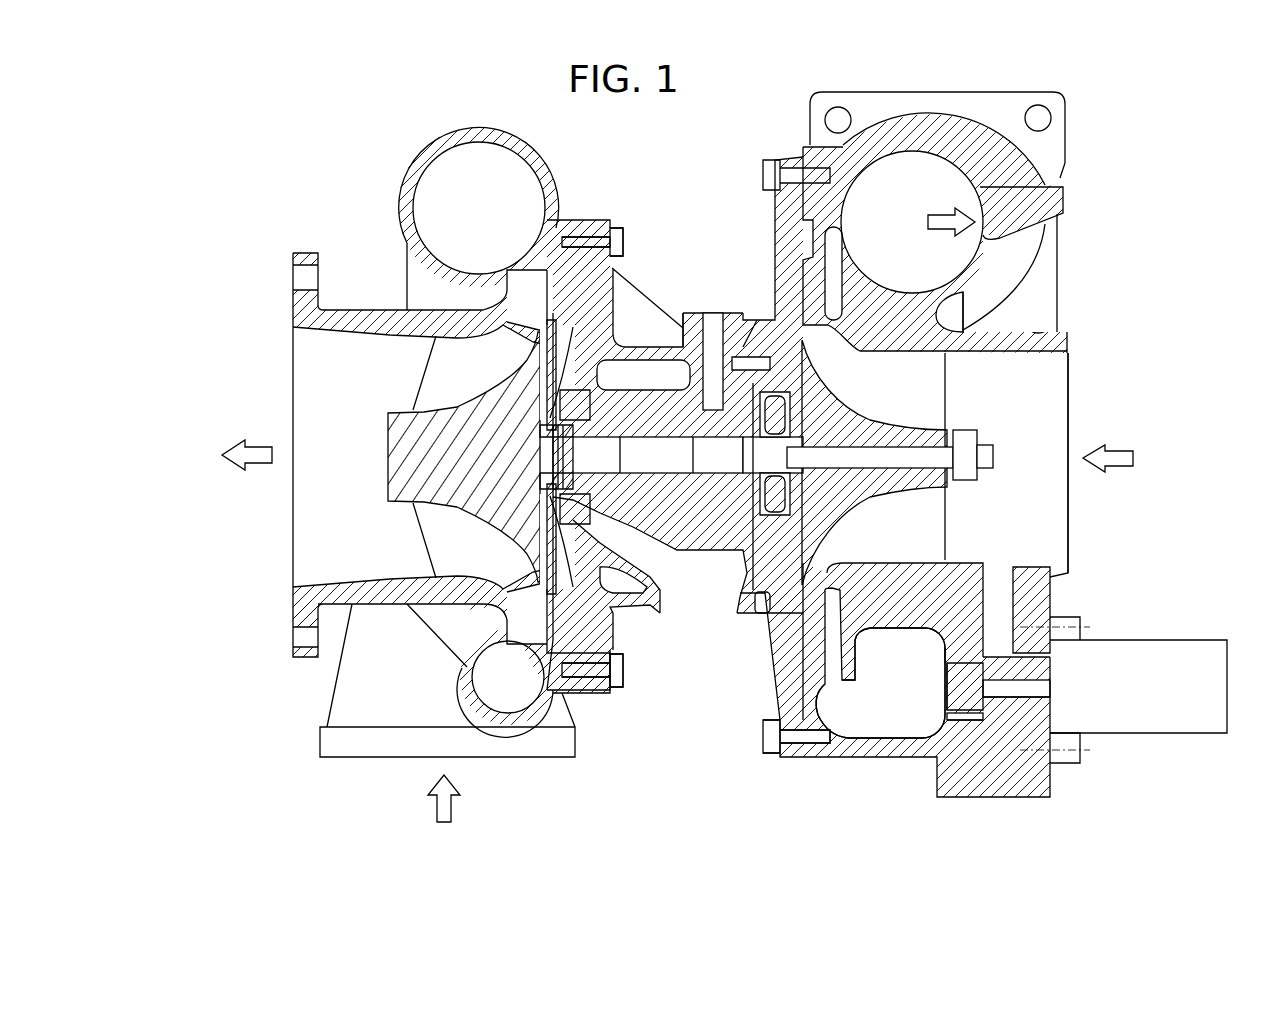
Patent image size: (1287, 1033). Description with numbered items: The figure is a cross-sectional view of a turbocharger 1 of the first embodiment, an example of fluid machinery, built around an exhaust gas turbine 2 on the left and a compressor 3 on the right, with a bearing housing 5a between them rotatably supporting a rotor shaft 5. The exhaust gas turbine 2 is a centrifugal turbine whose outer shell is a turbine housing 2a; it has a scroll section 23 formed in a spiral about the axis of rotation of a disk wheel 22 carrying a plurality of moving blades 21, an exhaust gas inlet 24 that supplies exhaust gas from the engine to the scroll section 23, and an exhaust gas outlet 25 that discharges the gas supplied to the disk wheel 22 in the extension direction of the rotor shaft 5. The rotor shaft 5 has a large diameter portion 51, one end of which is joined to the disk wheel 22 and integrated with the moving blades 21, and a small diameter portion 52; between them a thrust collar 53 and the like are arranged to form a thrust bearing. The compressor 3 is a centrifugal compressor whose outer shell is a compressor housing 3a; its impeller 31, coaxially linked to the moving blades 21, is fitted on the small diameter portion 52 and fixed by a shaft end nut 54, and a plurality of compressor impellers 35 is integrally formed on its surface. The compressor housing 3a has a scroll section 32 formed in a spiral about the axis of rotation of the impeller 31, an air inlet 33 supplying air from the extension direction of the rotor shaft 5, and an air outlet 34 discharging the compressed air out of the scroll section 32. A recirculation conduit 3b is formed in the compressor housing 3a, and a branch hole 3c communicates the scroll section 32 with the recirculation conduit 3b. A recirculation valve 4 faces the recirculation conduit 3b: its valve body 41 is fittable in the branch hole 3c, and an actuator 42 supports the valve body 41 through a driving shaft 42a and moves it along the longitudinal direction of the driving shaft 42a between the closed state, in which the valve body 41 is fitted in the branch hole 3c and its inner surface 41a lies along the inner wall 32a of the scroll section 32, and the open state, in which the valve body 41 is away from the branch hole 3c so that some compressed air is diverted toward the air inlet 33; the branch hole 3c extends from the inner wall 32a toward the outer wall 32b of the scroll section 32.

The turbocharger 1 is at (742, 94).
The exhaust gas turbine 2 is at (383, 200).
The turbine housing 2a is at (372, 310).
The moving blades 21 is at (430, 372).
The disk wheel 22 is at (480, 457).
The scroll section 23 is at (480, 141).
The exhaust gas inlet 24 is at (318, 740).
The exhaust gas outlet 25 is at (300, 368).
The compressor 3 is at (1088, 300).
The compressor housing 3a is at (1066, 205).
The recirculation conduit 3b is at (1018, 610).
The branch hole 3c is at (956, 726).
The impeller 31 is at (890, 462).
The scroll section 32 is at (888, 156).
The inner wall 32a is at (943, 655).
The outer wall 32b is at (985, 650).
The air inlet 33 is at (1062, 378).
The air outlet 34 is at (1015, 170).
The compressor impellers 35 is at (938, 384).
The recirculation valve 4 is at (1135, 624).
The valve body 41 is at (965, 686).
The inner surface 41a is at (947, 688).
The actuator 42 is at (1138, 686).
The driving shaft 42a is at (1012, 720).
The rotor shaft 5 is at (636, 445).
The bearing housing 5a is at (696, 313).
The large diameter portion 51 is at (658, 455).
The small diameter portion 52 is at (870, 457).
The thrust collar 53 is at (748, 382).
The shaft end nut 54 is at (966, 483).